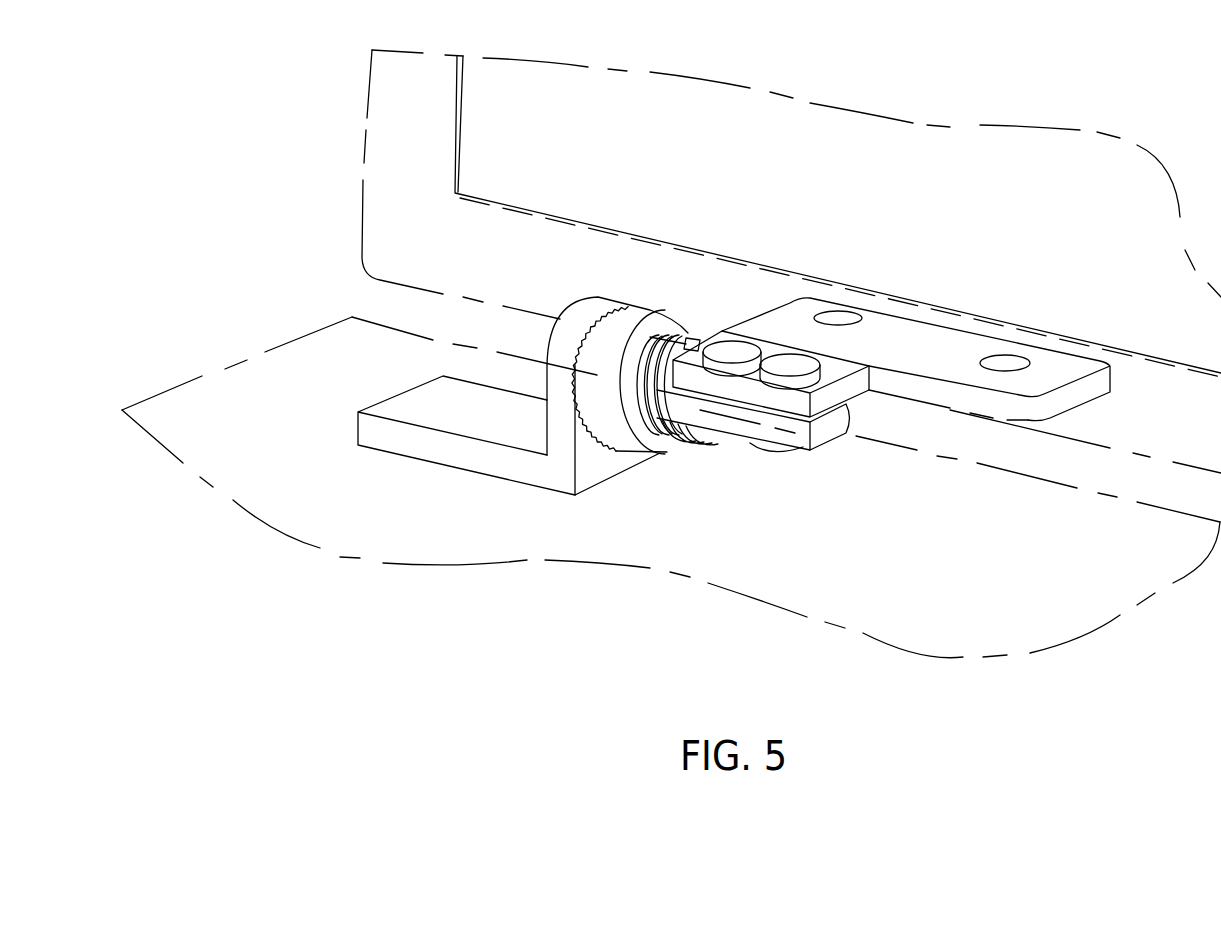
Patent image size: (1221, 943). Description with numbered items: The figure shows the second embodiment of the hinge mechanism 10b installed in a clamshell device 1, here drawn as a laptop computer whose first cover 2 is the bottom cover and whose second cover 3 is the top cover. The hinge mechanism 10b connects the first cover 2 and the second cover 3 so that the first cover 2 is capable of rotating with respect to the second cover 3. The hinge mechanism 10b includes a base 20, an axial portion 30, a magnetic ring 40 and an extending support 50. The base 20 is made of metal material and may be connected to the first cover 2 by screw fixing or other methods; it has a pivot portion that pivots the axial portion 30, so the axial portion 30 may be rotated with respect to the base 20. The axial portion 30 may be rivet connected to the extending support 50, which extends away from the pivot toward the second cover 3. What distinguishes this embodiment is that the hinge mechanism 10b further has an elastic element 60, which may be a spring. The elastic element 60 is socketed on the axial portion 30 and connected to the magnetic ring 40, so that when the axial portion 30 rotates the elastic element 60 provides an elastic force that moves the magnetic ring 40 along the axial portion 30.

The clamshell device 1 is at (192, 148).
The first cover 2 is at (222, 379).
The second cover 3 is at (367, 203).
The hinge mechanism 10b is at (897, 530).
The base 20 is at (445, 452).
The axial portion 30 is at (734, 430).
The magnetic ring 40 is at (624, 452).
The extending support 50 is at (937, 325).
The elastic element 60 is at (688, 336).